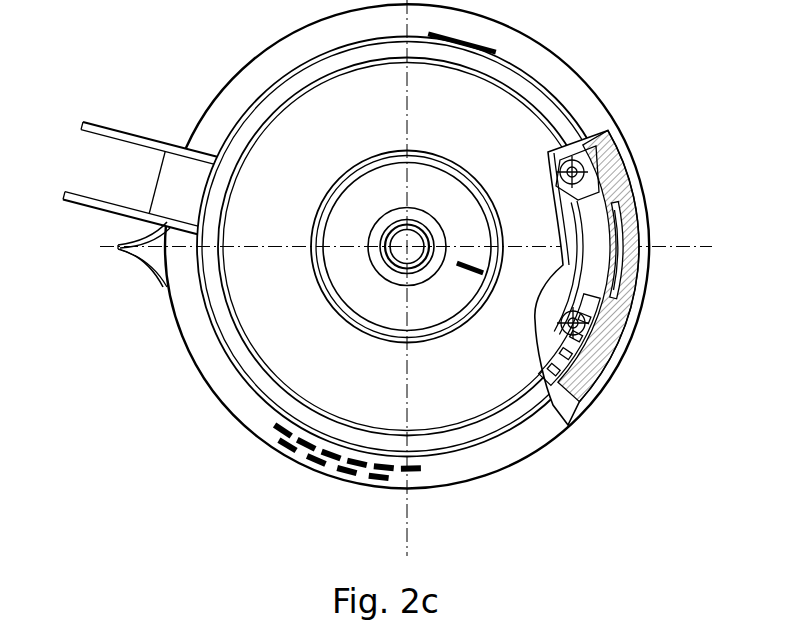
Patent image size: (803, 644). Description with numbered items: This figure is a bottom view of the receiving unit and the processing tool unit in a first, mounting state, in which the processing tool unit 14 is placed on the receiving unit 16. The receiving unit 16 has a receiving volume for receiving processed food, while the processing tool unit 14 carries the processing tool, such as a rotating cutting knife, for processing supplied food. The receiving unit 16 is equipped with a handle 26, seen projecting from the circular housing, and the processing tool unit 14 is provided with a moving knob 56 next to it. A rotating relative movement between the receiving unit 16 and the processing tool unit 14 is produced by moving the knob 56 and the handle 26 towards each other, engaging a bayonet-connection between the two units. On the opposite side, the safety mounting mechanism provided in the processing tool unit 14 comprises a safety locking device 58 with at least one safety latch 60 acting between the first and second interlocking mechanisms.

The processing tool unit 14 is at (177, 322).
The receiving unit 16 is at (218, 350).
The handle 26 is at (138, 137).
The moving knob 56 is at (137, 257).
The safety locking device 58 is at (655, 333).
The safety latch 60 is at (625, 323).